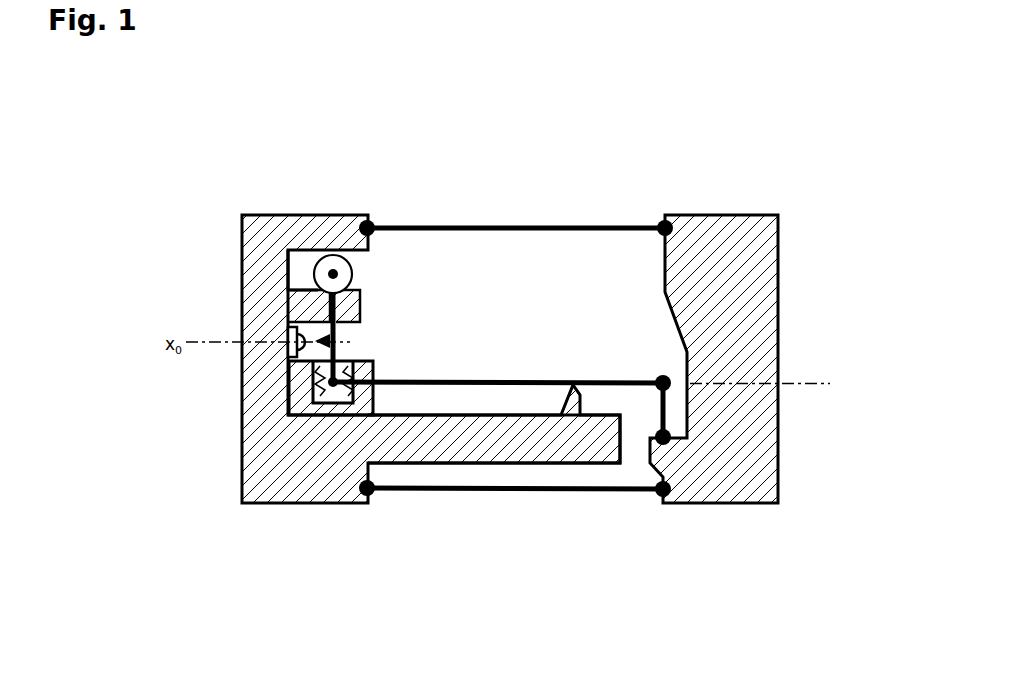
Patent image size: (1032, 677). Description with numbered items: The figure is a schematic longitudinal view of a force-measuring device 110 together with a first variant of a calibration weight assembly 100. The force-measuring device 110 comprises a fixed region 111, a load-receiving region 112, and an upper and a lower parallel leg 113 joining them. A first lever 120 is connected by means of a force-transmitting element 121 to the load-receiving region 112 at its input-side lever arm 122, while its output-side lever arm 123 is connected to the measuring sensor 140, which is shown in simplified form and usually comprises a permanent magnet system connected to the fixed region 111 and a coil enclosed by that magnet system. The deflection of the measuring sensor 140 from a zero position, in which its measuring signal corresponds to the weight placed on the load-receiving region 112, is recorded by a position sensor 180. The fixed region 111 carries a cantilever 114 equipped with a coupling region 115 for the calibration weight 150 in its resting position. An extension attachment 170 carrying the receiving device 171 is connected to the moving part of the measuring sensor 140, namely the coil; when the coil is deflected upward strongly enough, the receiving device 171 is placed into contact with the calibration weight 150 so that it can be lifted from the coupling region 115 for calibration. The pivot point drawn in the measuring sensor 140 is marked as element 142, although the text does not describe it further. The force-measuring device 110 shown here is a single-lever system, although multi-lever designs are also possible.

The calibration weight assembly 100 is at (263, 419).
The force-measuring device 110 is at (794, 163).
The fixed region 111 is at (319, 478).
The load-receiving region 112 is at (742, 283).
The parallel leg 113 is at (395, 224).
The cantilever 114 is at (303, 303).
The coupling region 115 is at (287, 263).
The first lever 120 is at (561, 355).
The force-transmitting element 121 is at (667, 413).
The input-side lever arm 122 is at (618, 380).
The output-side lever arm 123 is at (513, 386).
The measuring sensor 140 is at (385, 399).
The pivot pin 142 is at (333, 387).
The calibration weight 150 is at (307, 280).
The extension attachment 170 is at (340, 325).
The receiving device 171 is at (338, 276).
The position sensor 180 is at (284, 353).